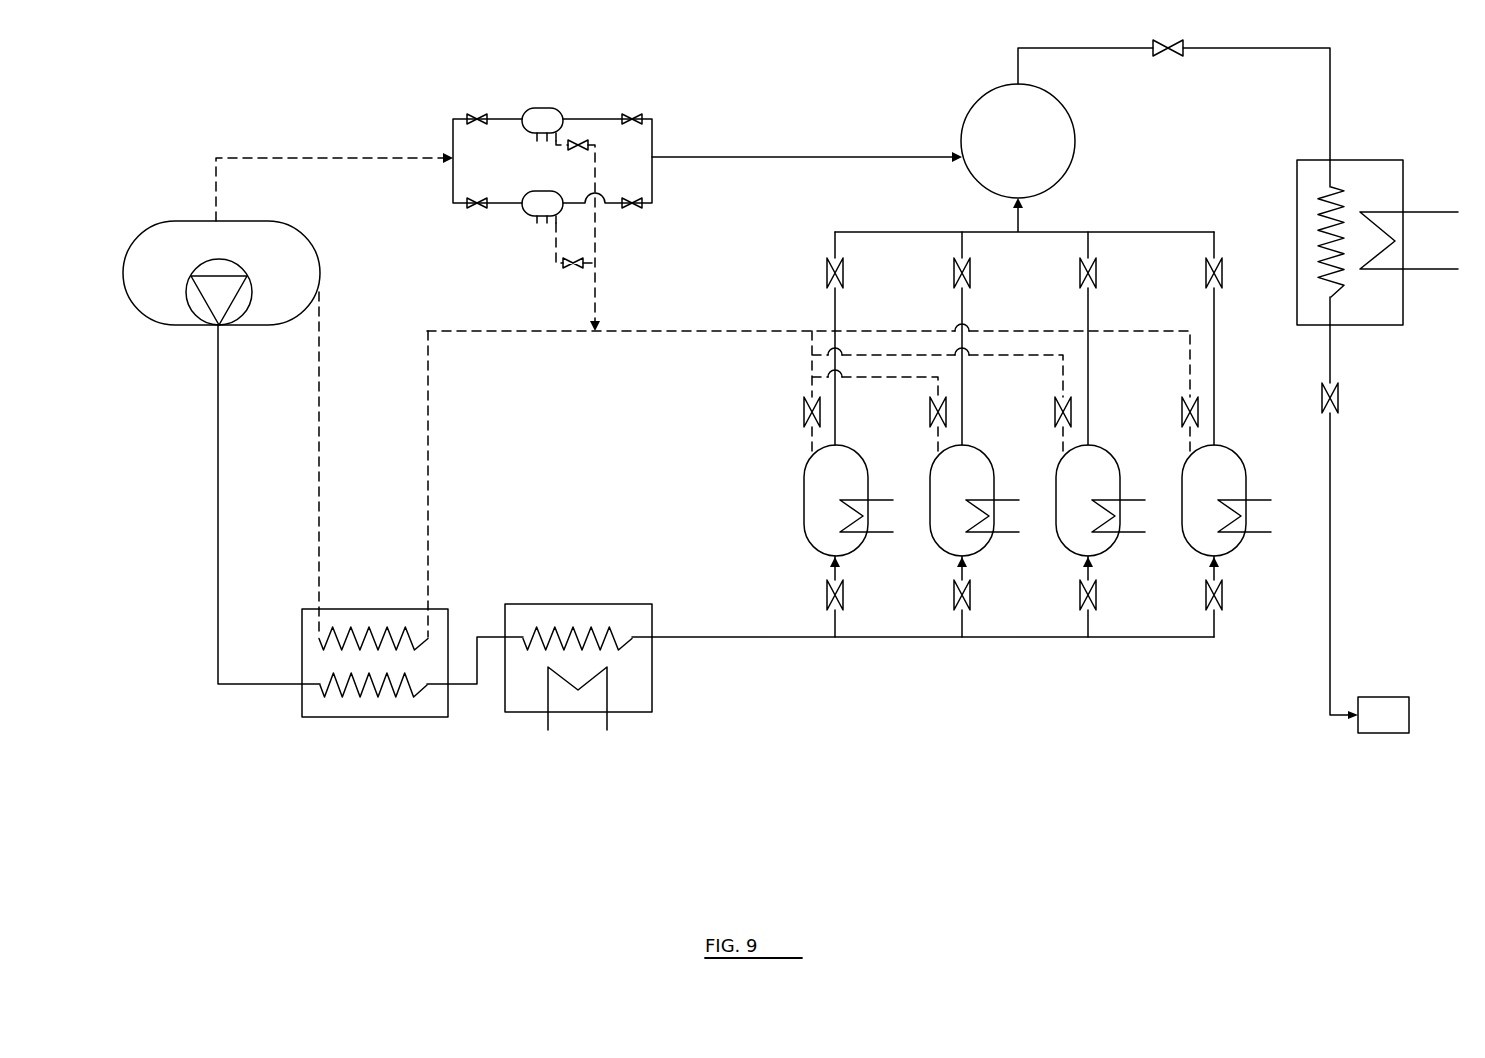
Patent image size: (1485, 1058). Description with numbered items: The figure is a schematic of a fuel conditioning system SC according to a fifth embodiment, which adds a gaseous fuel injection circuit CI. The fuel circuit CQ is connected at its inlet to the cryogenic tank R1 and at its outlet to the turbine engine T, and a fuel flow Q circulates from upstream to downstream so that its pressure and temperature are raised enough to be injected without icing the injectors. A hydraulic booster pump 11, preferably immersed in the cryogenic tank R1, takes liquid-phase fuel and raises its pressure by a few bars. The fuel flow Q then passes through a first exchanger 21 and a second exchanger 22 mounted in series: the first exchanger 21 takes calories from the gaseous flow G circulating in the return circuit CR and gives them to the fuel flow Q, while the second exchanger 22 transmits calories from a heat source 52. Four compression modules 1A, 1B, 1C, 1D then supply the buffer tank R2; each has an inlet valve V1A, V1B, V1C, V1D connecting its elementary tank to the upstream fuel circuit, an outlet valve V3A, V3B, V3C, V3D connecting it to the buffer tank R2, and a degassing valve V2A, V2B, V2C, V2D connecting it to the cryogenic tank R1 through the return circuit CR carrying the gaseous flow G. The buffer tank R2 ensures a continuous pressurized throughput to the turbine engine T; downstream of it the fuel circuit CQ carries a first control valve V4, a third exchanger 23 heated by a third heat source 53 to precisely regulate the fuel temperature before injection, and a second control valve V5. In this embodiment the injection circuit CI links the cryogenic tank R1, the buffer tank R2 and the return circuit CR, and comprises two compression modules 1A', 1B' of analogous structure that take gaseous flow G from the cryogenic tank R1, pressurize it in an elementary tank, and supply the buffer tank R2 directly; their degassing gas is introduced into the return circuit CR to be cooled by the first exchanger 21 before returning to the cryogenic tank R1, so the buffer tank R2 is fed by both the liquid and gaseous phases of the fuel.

The conditioning system SC is at (188, 110).
The injection circuit CI is at (403, 130).
The return circuit CR is at (660, 331).
The gaseous flow G is at (808, 471).
The hydraulic booster pump 11 is at (190, 292).
The cryogenic tank R1 is at (312, 240).
The buffer tank R2 is at (955, 140).
The compression module 1A' is at (521, 92).
The compression module 1B' is at (500, 237).
The compression module 1A is at (848, 500).
The compression module 1B is at (974, 500).
The compression module 1C is at (1104, 478).
The compression module 1D is at (1225, 478).
The first exchanger 21 is at (355, 609).
The second exchanger 22 is at (572, 604).
The third exchanger 23 is at (1378, 160).
The heat source 52 is at (591, 764).
The third heat source 53 is at (1458, 251).
The inlet valve V1A is at (858, 596).
The inlet valve V1B is at (984, 596).
The inlet valve V1C is at (1110, 596).
The inlet valve V1D is at (1238, 596).
The degassing valve V2A is at (791, 424).
The degassing valve V2B is at (917, 424).
The degassing valve V2C is at (1043, 424).
The degassing valve V2D is at (1171, 424).
The outlet valve V3A is at (856, 338).
The outlet valve V3B is at (982, 338).
The outlet valve V3C is at (1108, 338).
The outlet valve V3D is at (1237, 338).
The first control valve V4 is at (1174, 100).
The second control valve V5 is at (1348, 398).
The fuel flow Q is at (791, 441).
The fuel circuit CQ is at (218, 493).
The turbine engine T is at (1383, 715).